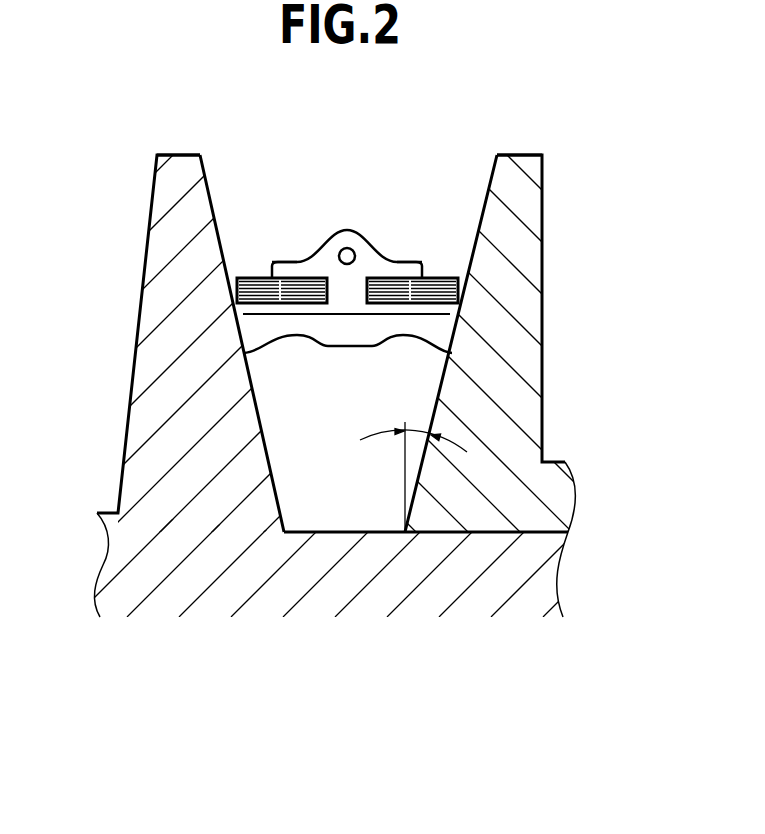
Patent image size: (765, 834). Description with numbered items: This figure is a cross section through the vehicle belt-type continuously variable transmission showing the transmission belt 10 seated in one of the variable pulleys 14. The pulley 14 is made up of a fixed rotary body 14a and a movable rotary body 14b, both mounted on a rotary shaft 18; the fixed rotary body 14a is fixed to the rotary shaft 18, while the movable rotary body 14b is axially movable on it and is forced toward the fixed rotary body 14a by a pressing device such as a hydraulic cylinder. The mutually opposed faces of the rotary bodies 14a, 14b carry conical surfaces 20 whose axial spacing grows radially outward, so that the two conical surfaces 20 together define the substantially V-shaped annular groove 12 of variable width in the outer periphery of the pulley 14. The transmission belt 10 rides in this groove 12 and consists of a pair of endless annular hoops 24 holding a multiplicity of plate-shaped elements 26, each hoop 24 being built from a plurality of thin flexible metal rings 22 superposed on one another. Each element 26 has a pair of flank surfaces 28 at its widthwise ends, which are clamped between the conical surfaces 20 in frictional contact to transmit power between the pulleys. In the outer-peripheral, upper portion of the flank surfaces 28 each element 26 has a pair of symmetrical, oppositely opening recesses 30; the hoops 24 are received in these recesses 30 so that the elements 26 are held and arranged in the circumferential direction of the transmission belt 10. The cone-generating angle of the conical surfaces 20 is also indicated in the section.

The transmission belt 10 is at (315, 172).
The V-shaped annular groove 12 is at (336, 498).
The variable pulley 14 is at (147, 121).
The fixed rotary body 14a is at (168, 282).
The movable rotary body 14b is at (523, 257).
The rotary shaft 18 is at (540, 587).
The conical surface 20 is at (212, 190).
The ring 22 is at (280, 288).
The endless annular hoop 24 is at (301, 276).
The plate-shaped element 26 is at (346, 241).
The flank surface 28 is at (240, 337).
The recess 30 is at (261, 274).